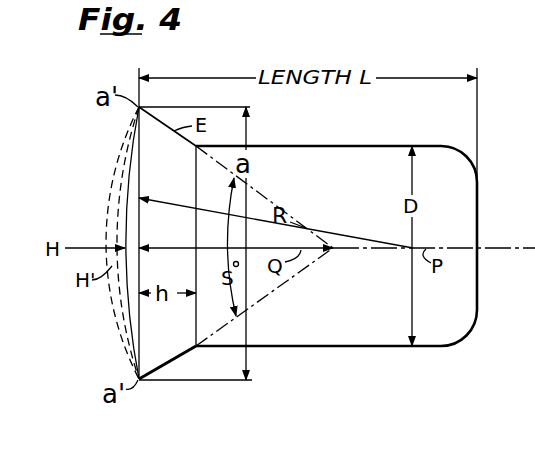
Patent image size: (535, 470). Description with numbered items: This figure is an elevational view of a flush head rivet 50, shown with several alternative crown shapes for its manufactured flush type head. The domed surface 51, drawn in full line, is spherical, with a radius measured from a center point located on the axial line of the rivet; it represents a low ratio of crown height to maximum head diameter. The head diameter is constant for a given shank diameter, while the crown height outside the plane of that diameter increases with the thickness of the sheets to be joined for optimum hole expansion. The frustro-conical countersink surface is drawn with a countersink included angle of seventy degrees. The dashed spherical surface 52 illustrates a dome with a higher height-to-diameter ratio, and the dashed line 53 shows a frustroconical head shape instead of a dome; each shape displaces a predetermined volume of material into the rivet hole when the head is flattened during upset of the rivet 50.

The rivet 50 is at (346, 146).
The domed surface 51 is at (129, 184).
The dashed spherical surface 52 is at (120, 338).
The dashed line 53 is at (124, 173).